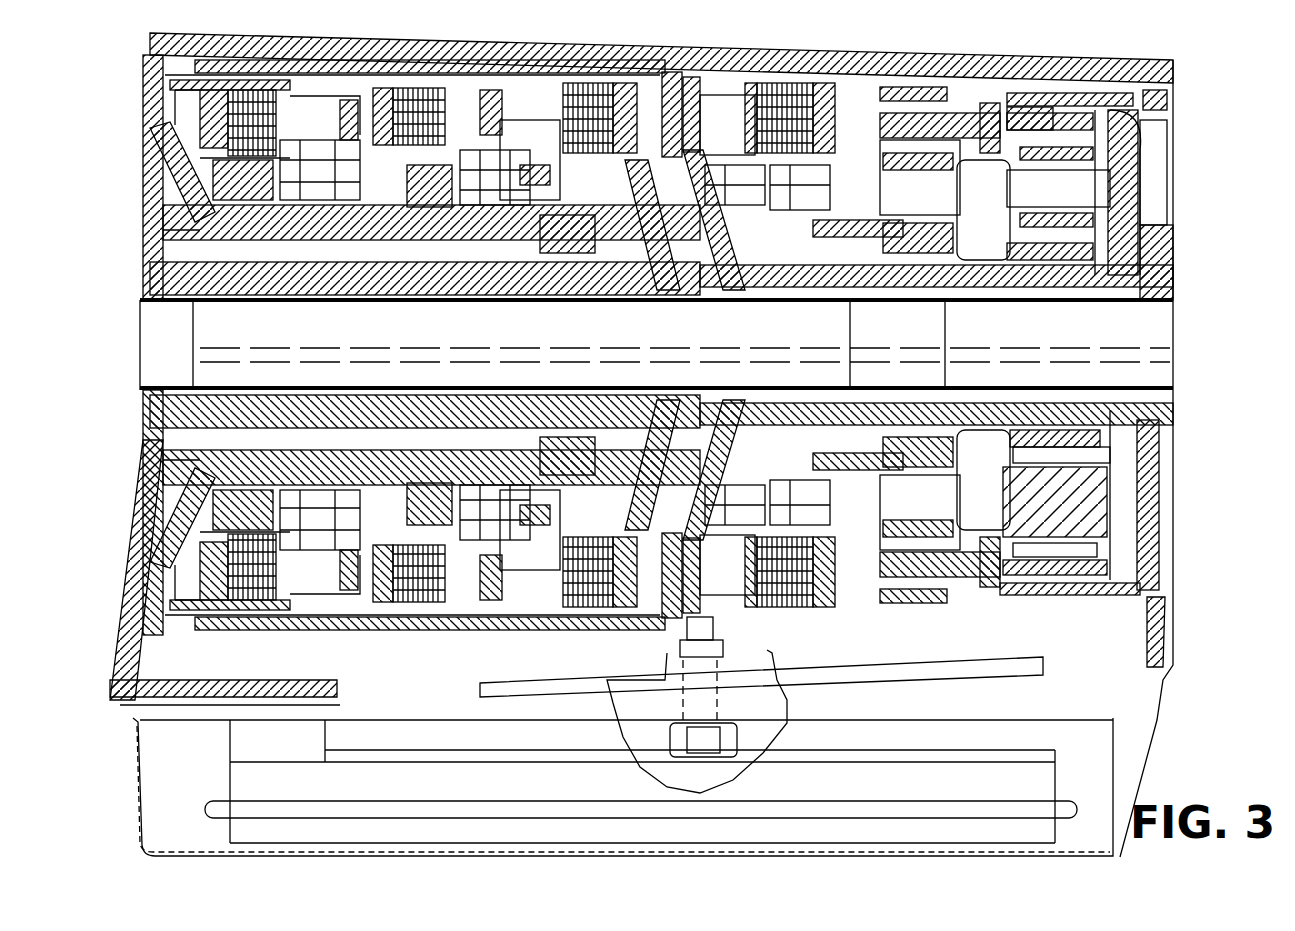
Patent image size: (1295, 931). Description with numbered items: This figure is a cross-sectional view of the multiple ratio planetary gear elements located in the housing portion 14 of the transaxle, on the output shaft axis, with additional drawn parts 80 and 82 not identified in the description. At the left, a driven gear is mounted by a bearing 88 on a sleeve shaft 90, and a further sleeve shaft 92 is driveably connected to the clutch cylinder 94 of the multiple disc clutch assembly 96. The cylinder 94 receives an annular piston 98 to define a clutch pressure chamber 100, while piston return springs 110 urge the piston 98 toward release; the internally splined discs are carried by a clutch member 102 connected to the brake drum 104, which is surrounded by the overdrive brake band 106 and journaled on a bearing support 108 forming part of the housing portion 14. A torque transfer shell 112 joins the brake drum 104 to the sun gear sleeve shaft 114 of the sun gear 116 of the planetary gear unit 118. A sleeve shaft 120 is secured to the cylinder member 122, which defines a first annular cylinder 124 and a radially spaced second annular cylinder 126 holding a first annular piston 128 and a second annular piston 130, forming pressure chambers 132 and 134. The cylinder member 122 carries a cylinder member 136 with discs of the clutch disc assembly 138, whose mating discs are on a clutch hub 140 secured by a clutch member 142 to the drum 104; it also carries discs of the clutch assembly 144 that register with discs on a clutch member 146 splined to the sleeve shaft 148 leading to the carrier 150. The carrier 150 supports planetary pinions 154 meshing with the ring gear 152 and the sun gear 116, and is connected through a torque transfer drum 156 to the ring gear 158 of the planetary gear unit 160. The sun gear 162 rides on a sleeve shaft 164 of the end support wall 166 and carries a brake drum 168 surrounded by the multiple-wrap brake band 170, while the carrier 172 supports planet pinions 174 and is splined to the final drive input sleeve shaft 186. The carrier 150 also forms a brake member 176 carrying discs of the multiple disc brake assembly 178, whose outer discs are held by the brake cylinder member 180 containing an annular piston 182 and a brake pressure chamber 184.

The housing portion 14 is at (855, 92).
The input shaft 80 is at (840, 370).
The sleeve 82 is at (175, 248).
The bearing 88 is at (170, 208).
The sleeve shaft 90 is at (245, 236).
The sleeve shaft 92 is at (284, 198).
The clutch cylinder 94 is at (378, 110).
The multiple disc clutch assembly 96 is at (175, 105).
The annular piston 98 is at (315, 105).
The clutch pressure chamber 100 is at (360, 232).
The clutch member 102 is at (165, 277).
The brake drum 104 is at (185, 66).
The overdrive brake band 106 is at (170, 58).
The bearing support 108 is at (160, 192).
The piston return springs 110 is at (317, 162).
The torque transfer shell 112 is at (545, 623).
The sun gear sleeve shaft 114 is at (773, 292).
The sun gear 116 is at (950, 262).
The planetary gear unit 118 is at (1015, 110).
The sleeve shaft 120 is at (470, 292).
The cylinder member 122 is at (540, 130).
The first annular cylinder 124 is at (446, 627).
The second annular cylinder 126 is at (530, 100).
The first annular piston 128 is at (448, 195).
The second annular piston 130 is at (560, 627).
The pressure chamber 132 is at (508, 252).
The pressure chamber 134 is at (685, 62).
The cylinder member 136 is at (457, 110).
The clutch disc assembly 138 is at (428, 637).
The clutch hub 140 is at (440, 240).
The clutch member 142 is at (372, 630).
The clutch assembly 144 is at (608, 627).
The clutch member 146 is at (660, 292).
The sleeve shaft 148 is at (977, 203).
The carrier 150 is at (992, 205).
The ring gear 152 is at (912, 118).
The planetary pinions 154 is at (905, 262).
The torque transfer drum 156 is at (960, 118).
The ring gear 158 is at (1044, 597).
The planetary gear unit 160 is at (1167, 120).
The sun gear 162 is at (1075, 268).
The sleeve shaft 164 is at (1120, 292).
The end support wall 166 is at (1172, 163).
The brake drum 168 is at (1175, 68).
The multiple-wrap brake band 170 is at (1090, 87).
The carrier 172 is at (1012, 210).
The planet pinions 174 is at (1068, 132).
The brake member 176 is at (823, 165).
The multiple disc brake assembly 178 is at (808, 110).
The brake cylinder member 180 is at (754, 170).
The annular piston 182 is at (752, 150).
The brake pressure chamber 184 is at (728, 292).
The final drive input sleeve shaft 186 is at (1175, 290).